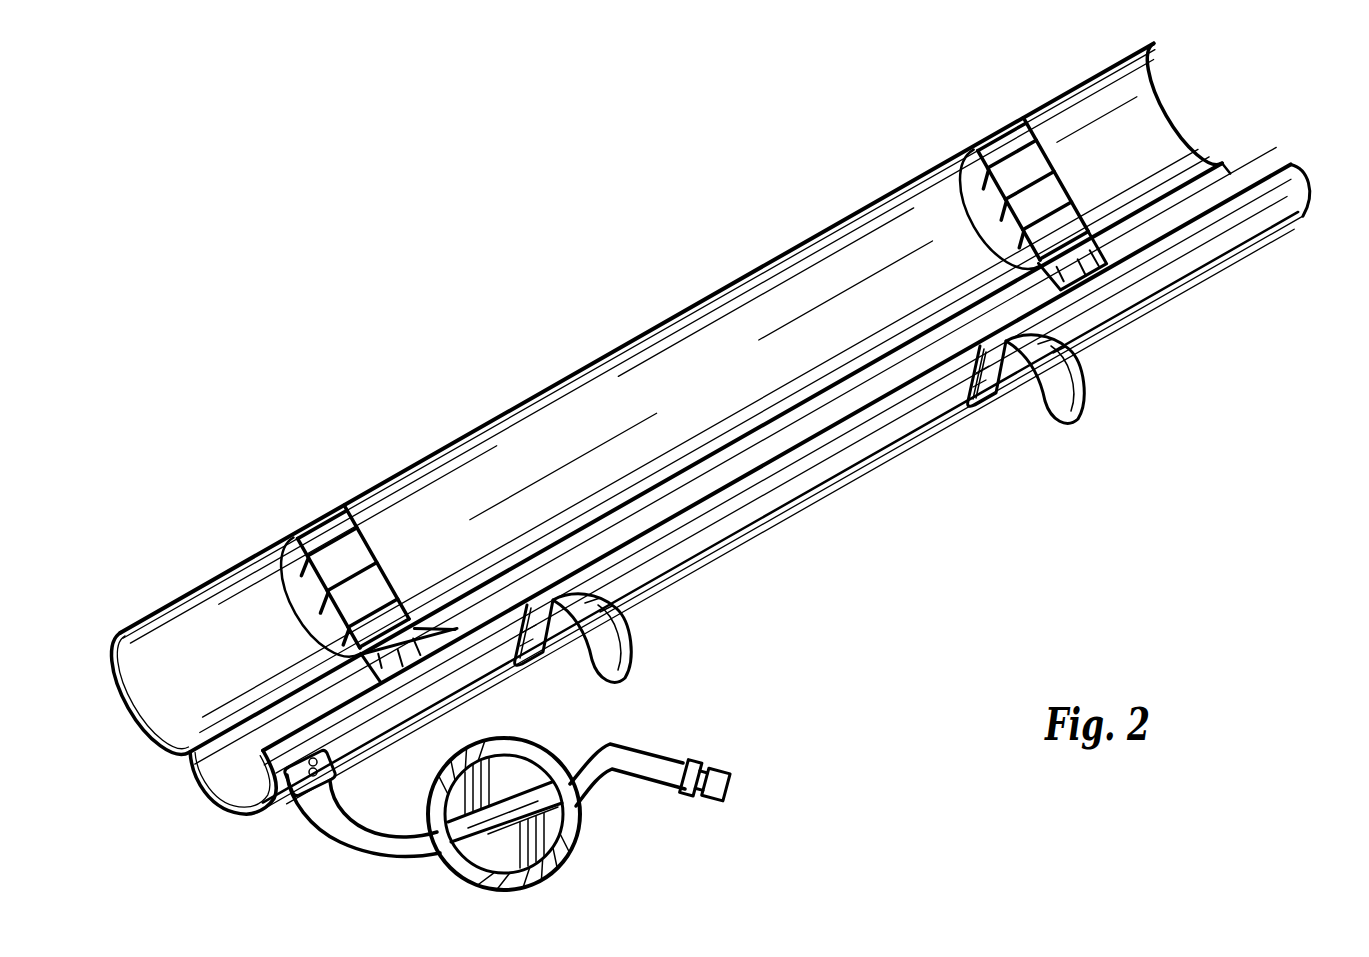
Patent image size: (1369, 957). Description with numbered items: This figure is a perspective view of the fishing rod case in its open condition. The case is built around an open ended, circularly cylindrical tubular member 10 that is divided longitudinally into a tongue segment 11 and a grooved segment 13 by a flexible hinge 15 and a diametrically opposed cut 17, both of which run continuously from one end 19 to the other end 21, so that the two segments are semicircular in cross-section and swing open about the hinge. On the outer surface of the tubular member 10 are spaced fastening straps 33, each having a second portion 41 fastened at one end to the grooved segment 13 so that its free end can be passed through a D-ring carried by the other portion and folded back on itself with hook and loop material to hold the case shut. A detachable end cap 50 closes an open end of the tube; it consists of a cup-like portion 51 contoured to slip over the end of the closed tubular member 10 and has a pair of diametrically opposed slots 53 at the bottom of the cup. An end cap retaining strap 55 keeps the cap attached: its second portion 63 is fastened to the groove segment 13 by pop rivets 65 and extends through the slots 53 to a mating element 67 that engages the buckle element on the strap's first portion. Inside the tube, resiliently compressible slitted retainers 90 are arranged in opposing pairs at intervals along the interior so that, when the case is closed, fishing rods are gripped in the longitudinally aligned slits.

The tubular member 10 is at (842, 512).
The segment 11 is at (172, 688).
The segment 13 is at (1305, 187).
The hinge 15 is at (760, 413).
The cut 17 is at (840, 415).
The end 19 is at (1162, 108).
The end 21 is at (145, 762).
The fastening strap 33 is at (1108, 384).
The second portion 41 is at (632, 635).
The end cap 50 is at (595, 856).
The cup-like portion 51 is at (545, 762).
The slots 53 is at (428, 825).
The end cap retaining strap 55 is at (621, 740).
The second portion 63 is at (606, 765).
The pop rivets 65 is at (330, 800).
The mating element 67 is at (722, 780).
The retainer 90 is at (975, 250).